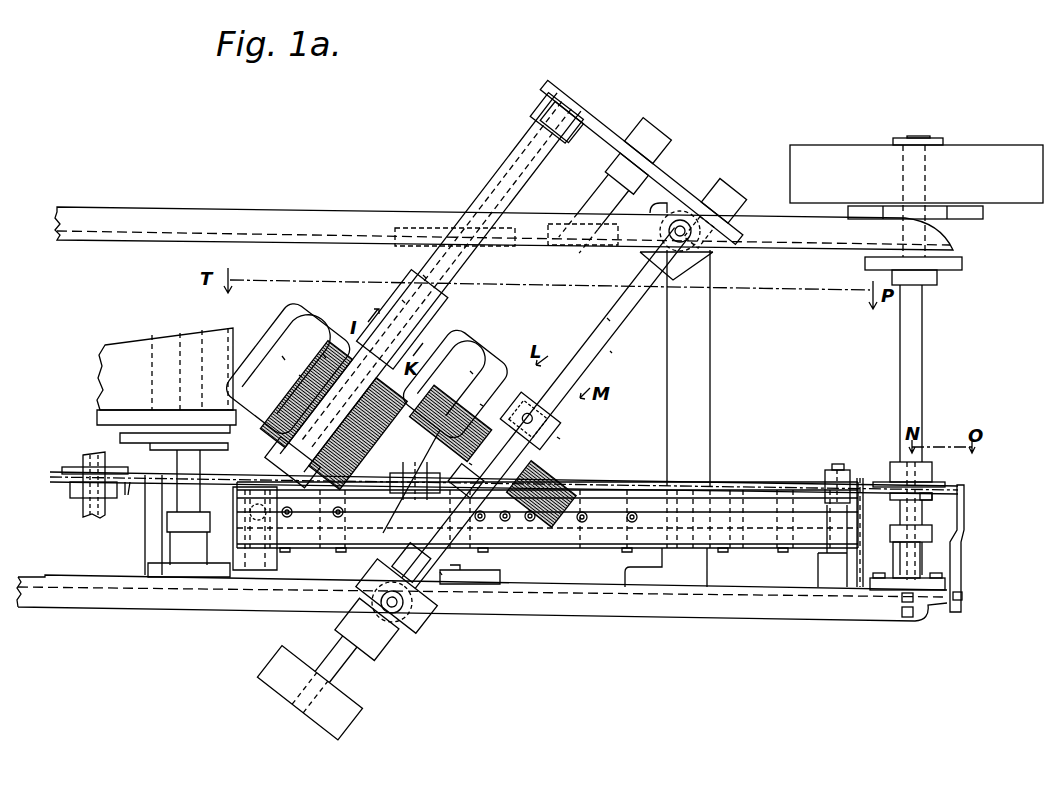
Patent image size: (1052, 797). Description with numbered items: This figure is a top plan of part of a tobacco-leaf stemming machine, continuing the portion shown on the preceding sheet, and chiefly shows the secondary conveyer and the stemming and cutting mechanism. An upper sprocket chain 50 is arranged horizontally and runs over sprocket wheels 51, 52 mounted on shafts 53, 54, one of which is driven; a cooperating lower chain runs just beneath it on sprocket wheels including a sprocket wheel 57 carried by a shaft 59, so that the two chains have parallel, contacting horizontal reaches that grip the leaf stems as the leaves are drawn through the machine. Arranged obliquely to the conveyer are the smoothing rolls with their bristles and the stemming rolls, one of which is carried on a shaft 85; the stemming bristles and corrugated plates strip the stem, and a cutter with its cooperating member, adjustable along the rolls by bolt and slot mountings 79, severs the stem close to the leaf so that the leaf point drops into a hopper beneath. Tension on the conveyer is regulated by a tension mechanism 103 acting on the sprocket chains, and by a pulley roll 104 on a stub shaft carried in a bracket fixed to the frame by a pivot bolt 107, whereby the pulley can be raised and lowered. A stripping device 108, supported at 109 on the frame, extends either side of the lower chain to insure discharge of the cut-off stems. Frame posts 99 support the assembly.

The upper sprocket chain 50 is at (141, 477).
The sprocket wheel 51 is at (124, 502).
The sprocket wheel 52 is at (935, 496).
The shaft 53 is at (87, 460).
The shaft 54 is at (925, 379).
The sprocket wheel 57 is at (868, 490).
The shaft 59 is at (927, 331).
The bolt and slot mountings 79 is at (222, 437).
The shaft 85 is at (608, 319).
The post 99 is at (712, 393).
The tension mechanism 103 is at (587, 550).
The pulley roll 104 is at (408, 505).
The pivot bolt 107 is at (463, 571).
The stripping device 108 is at (948, 484).
The support 109 is at (962, 591).